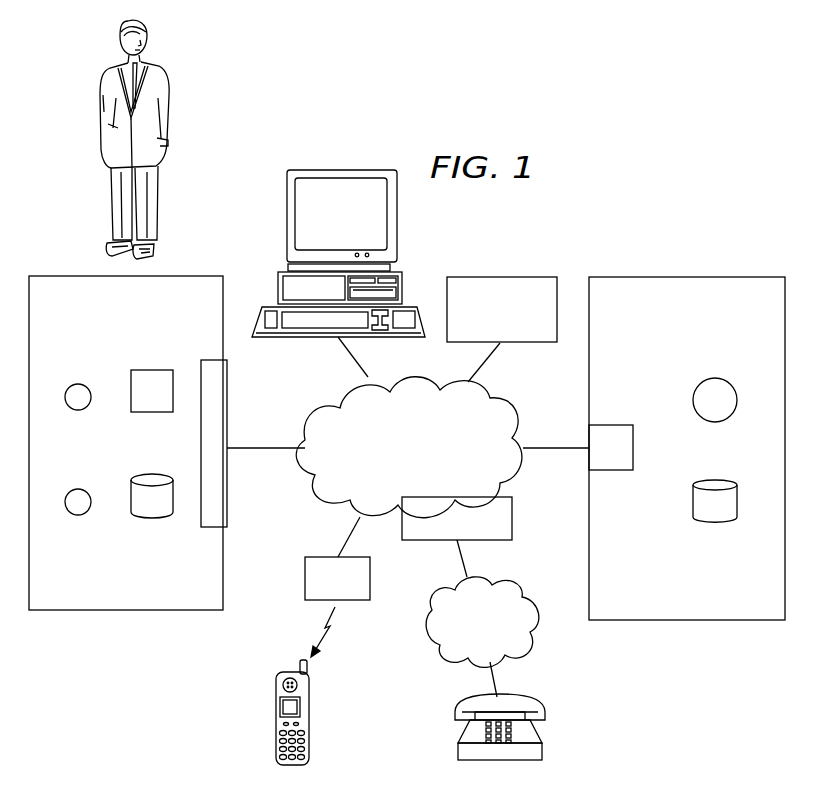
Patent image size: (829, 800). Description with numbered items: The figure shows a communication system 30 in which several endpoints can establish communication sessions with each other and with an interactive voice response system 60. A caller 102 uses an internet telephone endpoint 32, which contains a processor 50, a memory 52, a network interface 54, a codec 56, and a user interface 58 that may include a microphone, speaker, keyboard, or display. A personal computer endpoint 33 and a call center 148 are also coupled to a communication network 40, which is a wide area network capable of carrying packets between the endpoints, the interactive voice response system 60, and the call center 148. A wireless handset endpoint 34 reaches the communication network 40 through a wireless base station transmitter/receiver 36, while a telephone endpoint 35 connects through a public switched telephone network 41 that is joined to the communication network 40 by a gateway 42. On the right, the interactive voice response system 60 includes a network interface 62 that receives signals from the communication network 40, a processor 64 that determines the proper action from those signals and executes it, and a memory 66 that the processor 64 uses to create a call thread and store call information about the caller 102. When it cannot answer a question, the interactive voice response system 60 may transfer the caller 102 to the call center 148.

The communication system 30 is at (609, 178).
The caller 102 is at (101, 88).
The endpoint 33 is at (337, 168).
The call center 148 is at (505, 275).
The endpoint 32 is at (118, 612).
The codec 56 is at (77, 384).
The user interface 58 is at (148, 368).
The network interface 54 is at (212, 358).
The processor 50 is at (77, 516).
The memory 52 is at (152, 518).
The communication network 40 is at (427, 465).
The gateway 42 is at (512, 520).
The wireless base station transmitter/receiver 36 is at (305, 582).
The endpoint 34 is at (275, 727).
The communication network 41 is at (520, 650).
The endpoint 35 is at (542, 748).
The interactive voice response system 60 is at (695, 277).
The network interface 62 is at (617, 425).
The processor 64 is at (730, 380).
The memory 66 is at (717, 524).